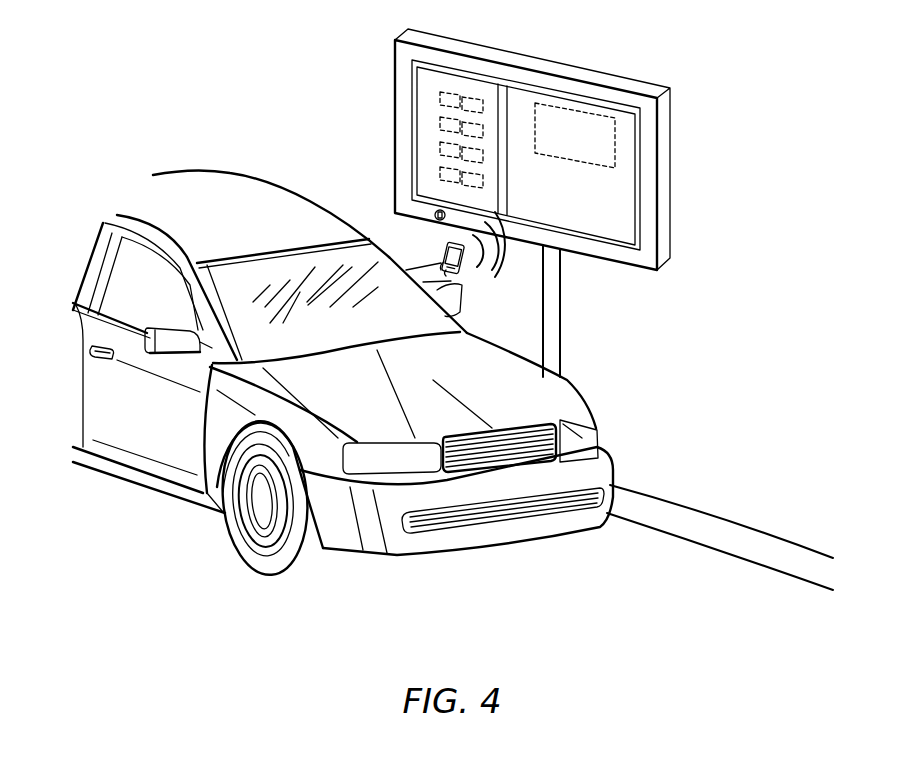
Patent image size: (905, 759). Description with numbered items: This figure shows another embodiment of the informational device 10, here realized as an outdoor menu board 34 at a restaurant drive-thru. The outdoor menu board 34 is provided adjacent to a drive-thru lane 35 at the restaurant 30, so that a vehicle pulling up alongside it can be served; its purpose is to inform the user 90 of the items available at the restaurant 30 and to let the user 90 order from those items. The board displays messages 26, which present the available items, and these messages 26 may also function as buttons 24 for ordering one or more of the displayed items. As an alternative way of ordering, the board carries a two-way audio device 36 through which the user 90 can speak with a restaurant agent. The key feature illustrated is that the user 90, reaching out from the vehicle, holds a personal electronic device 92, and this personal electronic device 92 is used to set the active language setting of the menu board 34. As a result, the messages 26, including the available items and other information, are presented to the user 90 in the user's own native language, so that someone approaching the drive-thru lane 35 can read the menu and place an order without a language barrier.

The informational device 10 is at (530, 203).
The outdoor menu board 34 is at (530, 203).
The buttons 24 is at (488, 155).
The messages 26 is at (586, 116).
The two-way audio device 36 is at (435, 217).
The user 90 is at (411, 262).
The personal electronic device 92 is at (458, 271).
The restaurant 30 is at (709, 426).
The drive-thru lane 35 is at (556, 591).